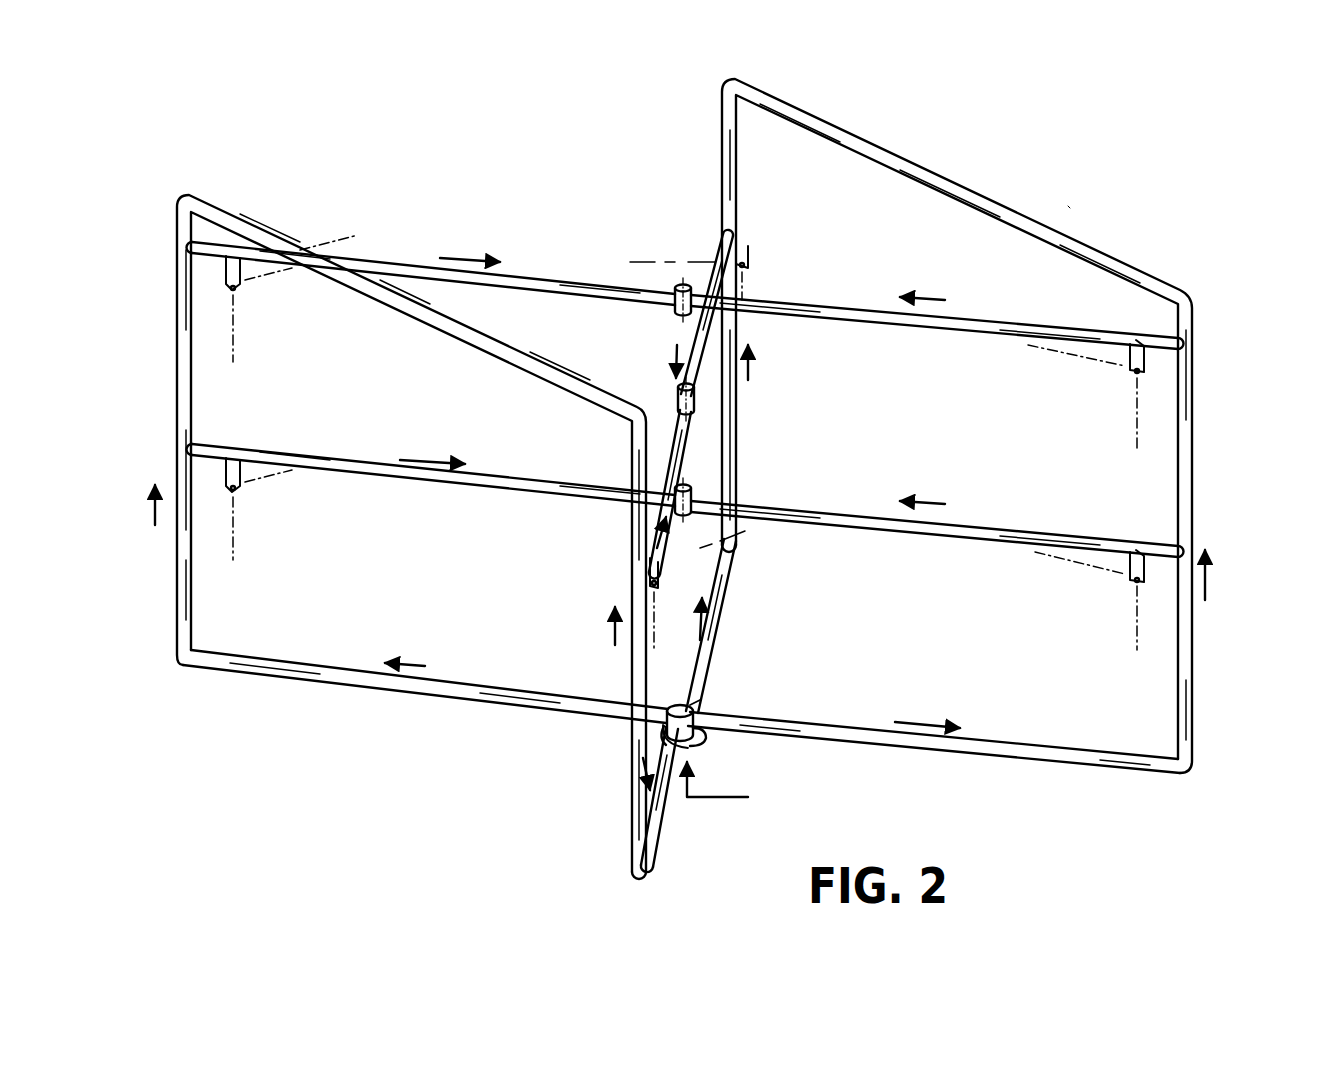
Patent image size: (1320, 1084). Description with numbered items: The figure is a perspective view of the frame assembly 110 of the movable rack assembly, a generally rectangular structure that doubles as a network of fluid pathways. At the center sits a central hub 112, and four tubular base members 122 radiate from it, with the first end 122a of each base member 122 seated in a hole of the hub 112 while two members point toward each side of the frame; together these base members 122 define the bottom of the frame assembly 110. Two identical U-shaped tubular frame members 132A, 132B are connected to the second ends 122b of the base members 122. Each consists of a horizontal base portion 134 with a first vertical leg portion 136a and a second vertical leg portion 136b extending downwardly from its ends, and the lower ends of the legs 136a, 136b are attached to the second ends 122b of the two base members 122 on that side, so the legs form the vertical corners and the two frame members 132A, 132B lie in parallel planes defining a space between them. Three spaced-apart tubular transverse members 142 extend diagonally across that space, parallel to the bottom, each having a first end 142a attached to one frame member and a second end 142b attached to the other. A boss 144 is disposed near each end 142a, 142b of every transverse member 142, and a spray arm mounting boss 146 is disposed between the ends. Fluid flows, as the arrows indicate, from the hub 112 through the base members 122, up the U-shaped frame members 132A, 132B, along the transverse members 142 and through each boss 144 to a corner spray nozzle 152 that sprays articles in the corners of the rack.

The frame assembly 110 is at (1068, 206).
The central hub 112 is at (712, 706).
The tubular base member 122 is at (403, 692).
The first end 122a is at (657, 736).
The second end 122b is at (203, 670).
The U-shaped tubular frame member 132A is at (238, 206).
The U-shaped tubular frame member 132B is at (1150, 272).
The horizontal base portion 134 is at (452, 332).
The first vertical leg portion 136a is at (185, 356).
The second vertical leg portion 136b is at (638, 668).
The tubular transverse member 142 is at (838, 298).
The first end 142a is at (722, 237).
The second end 142b is at (205, 255).
The boss 144 is at (232, 262).
The spray arm mounting boss 146 is at (680, 393).
The corner spray nozzle 152 is at (240, 290).